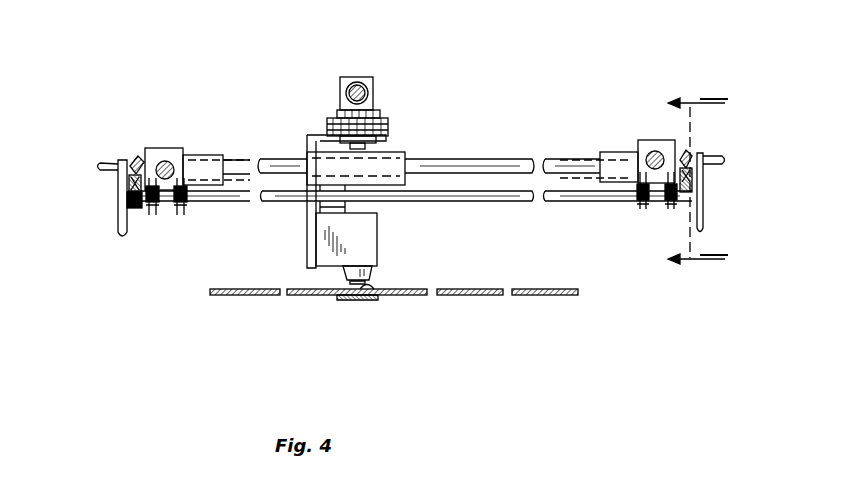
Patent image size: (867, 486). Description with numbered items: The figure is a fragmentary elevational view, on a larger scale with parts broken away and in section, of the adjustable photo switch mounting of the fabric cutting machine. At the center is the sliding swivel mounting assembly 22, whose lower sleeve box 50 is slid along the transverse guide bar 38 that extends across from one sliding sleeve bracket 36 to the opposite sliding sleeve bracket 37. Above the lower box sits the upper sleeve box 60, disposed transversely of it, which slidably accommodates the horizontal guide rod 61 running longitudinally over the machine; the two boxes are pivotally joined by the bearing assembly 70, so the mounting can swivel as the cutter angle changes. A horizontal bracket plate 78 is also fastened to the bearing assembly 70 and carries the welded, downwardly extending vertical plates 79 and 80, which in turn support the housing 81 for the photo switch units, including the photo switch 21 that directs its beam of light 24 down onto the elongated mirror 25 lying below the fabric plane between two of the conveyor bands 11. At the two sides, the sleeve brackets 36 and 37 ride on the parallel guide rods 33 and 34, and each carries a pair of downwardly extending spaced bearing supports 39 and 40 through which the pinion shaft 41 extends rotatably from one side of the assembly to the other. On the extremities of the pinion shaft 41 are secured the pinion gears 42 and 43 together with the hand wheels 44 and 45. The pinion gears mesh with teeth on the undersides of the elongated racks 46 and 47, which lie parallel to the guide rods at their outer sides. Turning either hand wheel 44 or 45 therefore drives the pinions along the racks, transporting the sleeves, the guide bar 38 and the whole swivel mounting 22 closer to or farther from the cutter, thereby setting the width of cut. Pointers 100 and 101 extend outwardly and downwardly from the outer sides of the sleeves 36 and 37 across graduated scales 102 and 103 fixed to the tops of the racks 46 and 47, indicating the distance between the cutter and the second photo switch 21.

The conveyor bands 11 is at (246, 297).
The photo switch 21 is at (372, 275).
The sliding swivel mounting assembly 22 is at (393, 121).
The beam of light 24 is at (370, 295).
The elongated mirror 25 is at (345, 300).
The guide rod 33 is at (165, 161).
The guide rod 34 is at (648, 157).
The sliding sleeve bracket 36 is at (180, 150).
The sliding sleeve bracket 37 is at (662, 143).
The transverse guide bar 38 is at (490, 158).
The bearing supports 39 is at (180, 215).
The bearing supports 40 is at (670, 210).
The pinion shaft 41 is at (500, 203).
The pinion gear 42 is at (137, 208).
The pinion gear 43 is at (692, 222).
The hand wheel 44 is at (120, 225).
The hand wheel 45 is at (703, 215).
The rack 46 is at (130, 184).
The rack 47 is at (692, 176).
The sleeve box 50 is at (402, 152).
The upper sleeve box 60 is at (370, 80).
The horizontal guide rod 61 is at (357, 84).
The bearing assembly 70 is at (330, 125).
The horizontal bracket plate 78 is at (307, 137).
The vertical plate 79 is at (307, 233).
The vertical plate 80 is at (338, 207).
The housing 81 is at (368, 238).
The pointer 100 is at (138, 160).
The pointer 101 is at (690, 158).
The graduated scale 102 is at (130, 165).
The graduated scale 103 is at (700, 160).